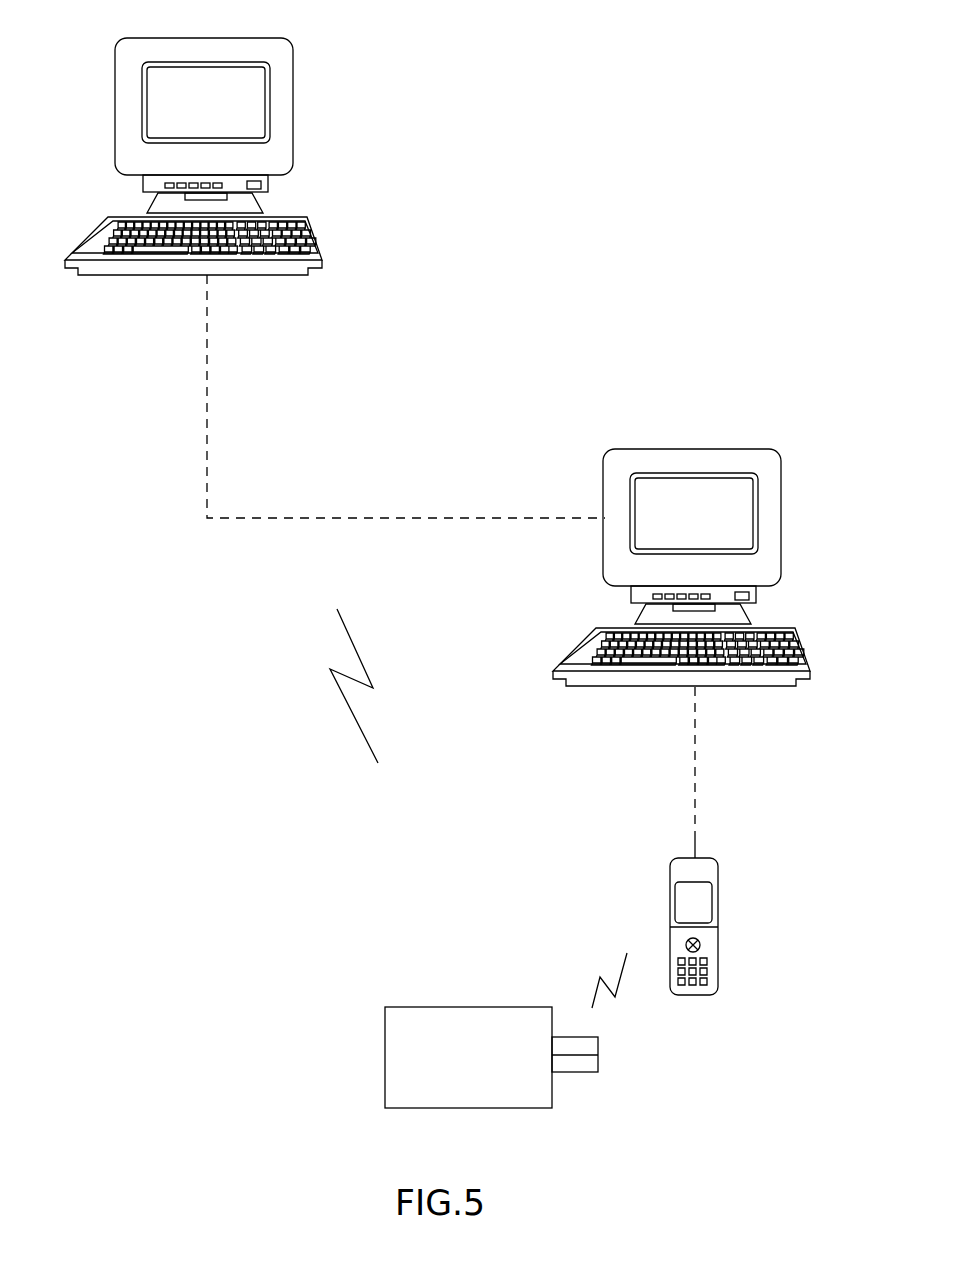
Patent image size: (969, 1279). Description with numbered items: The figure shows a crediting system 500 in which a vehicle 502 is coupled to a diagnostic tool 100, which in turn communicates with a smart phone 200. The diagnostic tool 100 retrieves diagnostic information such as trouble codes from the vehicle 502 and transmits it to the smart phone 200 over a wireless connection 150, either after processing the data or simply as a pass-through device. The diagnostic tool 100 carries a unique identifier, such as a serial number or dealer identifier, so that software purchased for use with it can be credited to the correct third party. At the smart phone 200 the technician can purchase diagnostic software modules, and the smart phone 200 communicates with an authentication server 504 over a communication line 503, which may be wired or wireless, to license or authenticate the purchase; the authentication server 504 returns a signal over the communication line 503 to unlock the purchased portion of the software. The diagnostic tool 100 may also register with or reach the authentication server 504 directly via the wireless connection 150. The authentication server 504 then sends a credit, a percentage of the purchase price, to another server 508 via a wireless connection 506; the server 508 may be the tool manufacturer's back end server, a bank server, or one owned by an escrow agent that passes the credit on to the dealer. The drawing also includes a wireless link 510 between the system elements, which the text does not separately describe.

The server 508 is at (333, 152).
The crediting system 500 is at (635, 217).
The wireless connection 506 is at (185, 392).
The authentication server 504 is at (757, 422).
The communication line 503 is at (677, 778).
The wireless link 510 is at (325, 686).
The smart phone 200 is at (743, 957).
The wireless connection 150 is at (594, 973).
The vehicle 502 is at (468, 1005).
The diagnostic tool 100 is at (577, 1072).